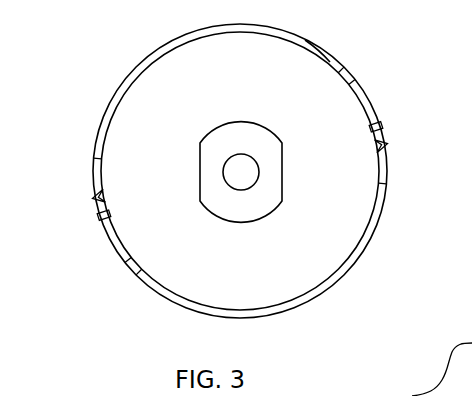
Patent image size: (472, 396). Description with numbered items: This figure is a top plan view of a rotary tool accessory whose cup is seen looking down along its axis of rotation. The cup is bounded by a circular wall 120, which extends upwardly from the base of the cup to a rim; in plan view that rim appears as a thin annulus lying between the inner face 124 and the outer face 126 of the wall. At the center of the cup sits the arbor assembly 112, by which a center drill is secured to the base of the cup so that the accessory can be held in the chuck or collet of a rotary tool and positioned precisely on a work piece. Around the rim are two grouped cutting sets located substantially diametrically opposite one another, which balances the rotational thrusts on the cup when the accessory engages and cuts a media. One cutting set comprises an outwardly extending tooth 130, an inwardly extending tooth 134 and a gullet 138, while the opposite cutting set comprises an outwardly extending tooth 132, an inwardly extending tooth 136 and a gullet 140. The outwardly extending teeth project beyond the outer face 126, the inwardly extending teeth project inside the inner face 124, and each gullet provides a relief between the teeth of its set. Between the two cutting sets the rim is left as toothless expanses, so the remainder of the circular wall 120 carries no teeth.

The arbor assembly 112 is at (200, 142).
The circular wall 120 is at (336, 275).
The inner face 124 is at (293, 44).
The outer face 126 is at (379, 214).
The outwardly extending tooth 130 is at (383, 127).
The outwardly extending tooth 132 is at (103, 215).
The inwardly extending tooth 134 is at (375, 146).
The inwardly extending tooth 136 is at (108, 194).
The gullet 138 is at (362, 92).
The gullet 140 is at (119, 257).